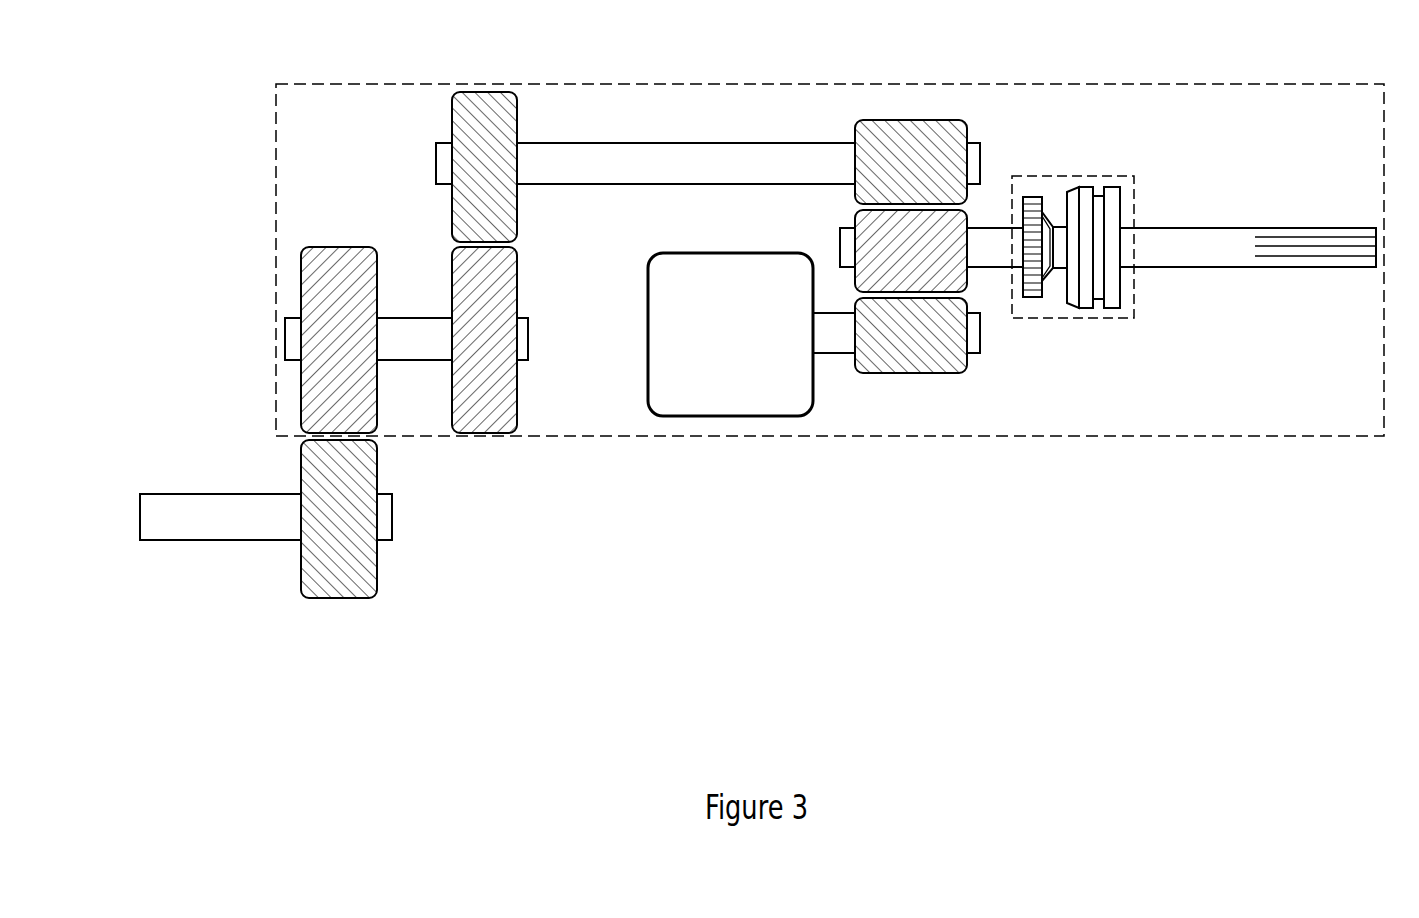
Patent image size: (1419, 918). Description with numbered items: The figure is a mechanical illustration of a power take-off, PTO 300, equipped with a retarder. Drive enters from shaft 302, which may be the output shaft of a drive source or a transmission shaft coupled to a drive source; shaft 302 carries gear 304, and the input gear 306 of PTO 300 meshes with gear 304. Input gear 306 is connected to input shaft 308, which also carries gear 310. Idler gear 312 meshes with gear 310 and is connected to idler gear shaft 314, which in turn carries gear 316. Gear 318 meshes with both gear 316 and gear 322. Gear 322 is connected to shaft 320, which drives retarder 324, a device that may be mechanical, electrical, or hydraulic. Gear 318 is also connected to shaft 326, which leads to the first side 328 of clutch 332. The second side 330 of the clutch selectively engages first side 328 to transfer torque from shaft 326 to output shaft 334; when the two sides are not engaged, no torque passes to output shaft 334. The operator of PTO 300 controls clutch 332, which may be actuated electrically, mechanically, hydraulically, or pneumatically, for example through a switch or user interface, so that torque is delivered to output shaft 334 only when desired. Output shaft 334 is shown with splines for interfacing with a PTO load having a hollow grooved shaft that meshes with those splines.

The PTO 300 is at (801, 232).
The shaft 302 is at (258, 481).
The gear 304 is at (299, 512).
The input gear 306 is at (293, 340).
The input shaft 308 is at (377, 300).
The gear 310 is at (446, 327).
The idler gear 312 is at (445, 167).
The idler gear shaft 314 is at (669, 149).
The gear 316 is at (952, 150).
The gear 318 is at (940, 219).
The shaft 320 is at (936, 333).
The gear 322 is at (950, 339).
The retarder 324 is at (770, 334).
The shaft 326 is at (897, 234).
The first side 328 is at (1055, 208).
The second side 330 is at (1085, 213).
The clutch 332 is at (1248, 214).
The output shaft 334 is at (1309, 201).